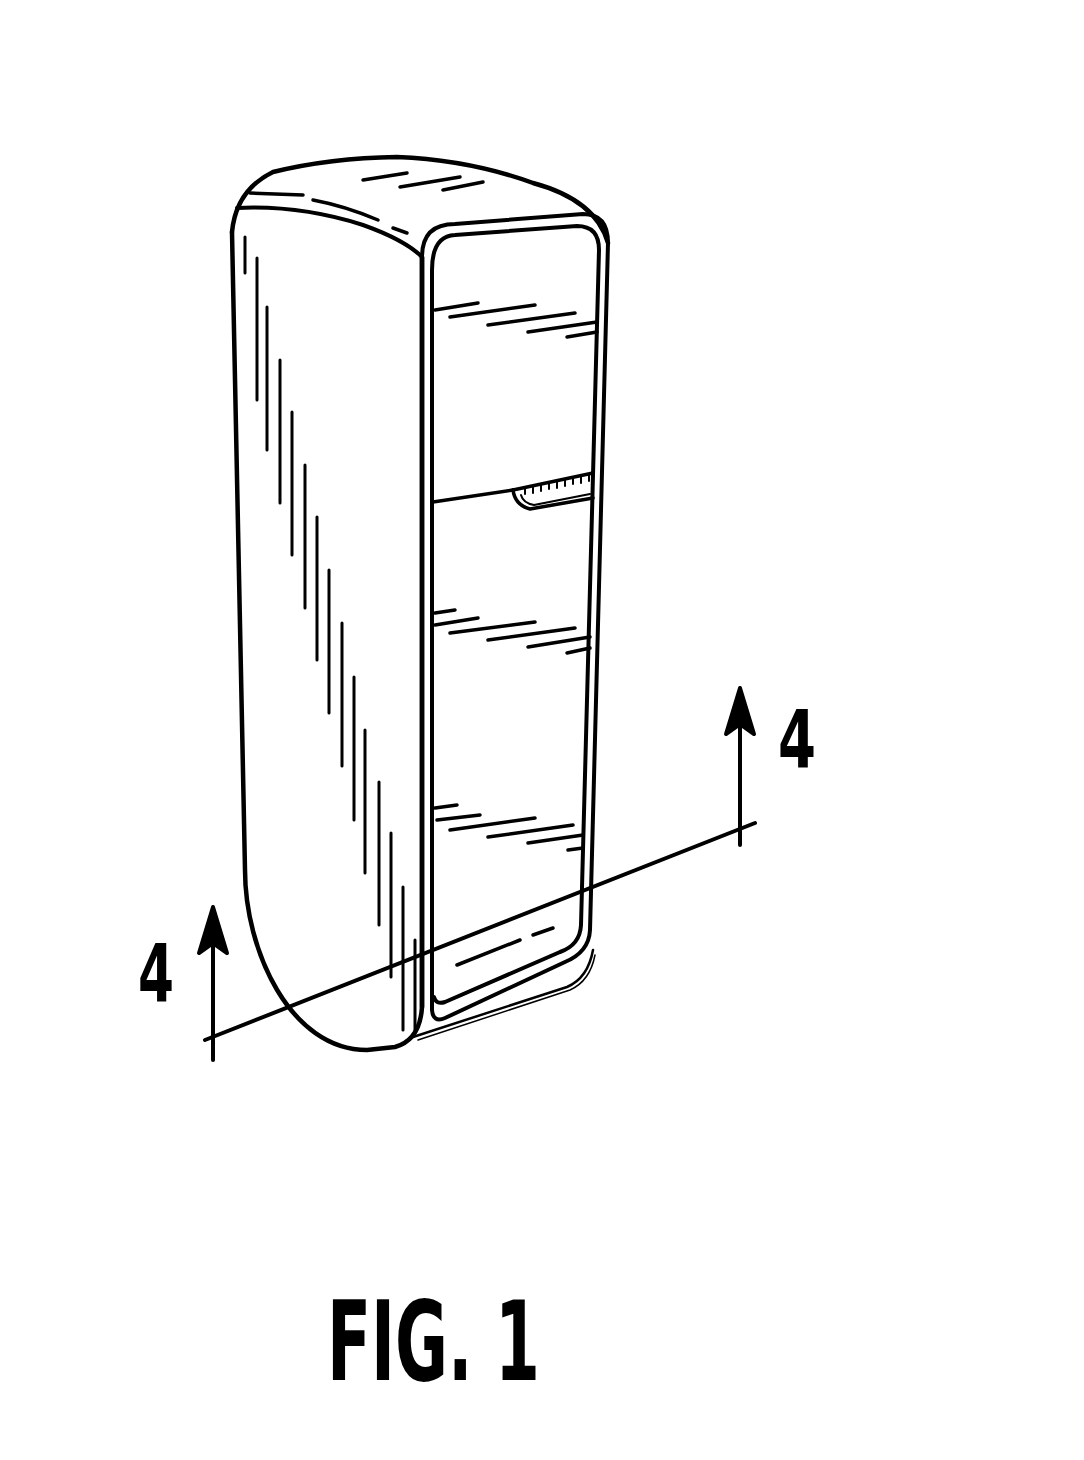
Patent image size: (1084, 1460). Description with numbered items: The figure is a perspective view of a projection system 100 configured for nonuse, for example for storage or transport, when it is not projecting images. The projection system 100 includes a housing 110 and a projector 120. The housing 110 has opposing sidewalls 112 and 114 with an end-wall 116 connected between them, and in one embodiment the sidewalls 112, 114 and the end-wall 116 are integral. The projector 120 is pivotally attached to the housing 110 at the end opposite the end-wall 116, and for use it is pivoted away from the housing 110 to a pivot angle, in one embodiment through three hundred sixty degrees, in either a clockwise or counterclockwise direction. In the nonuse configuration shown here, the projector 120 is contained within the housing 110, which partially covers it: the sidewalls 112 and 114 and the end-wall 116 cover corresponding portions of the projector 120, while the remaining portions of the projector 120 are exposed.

The projection system 100 is at (707, 100).
The housing 110 is at (605, 240).
The sidewall 112 is at (433, 543).
The sidewall 114 is at (600, 552).
The end-wall 116 is at (500, 197).
The projector 120 is at (577, 385).